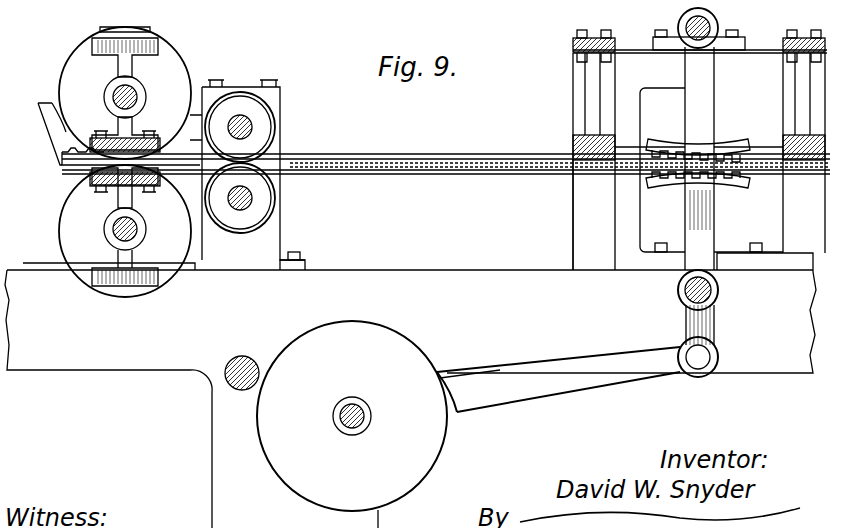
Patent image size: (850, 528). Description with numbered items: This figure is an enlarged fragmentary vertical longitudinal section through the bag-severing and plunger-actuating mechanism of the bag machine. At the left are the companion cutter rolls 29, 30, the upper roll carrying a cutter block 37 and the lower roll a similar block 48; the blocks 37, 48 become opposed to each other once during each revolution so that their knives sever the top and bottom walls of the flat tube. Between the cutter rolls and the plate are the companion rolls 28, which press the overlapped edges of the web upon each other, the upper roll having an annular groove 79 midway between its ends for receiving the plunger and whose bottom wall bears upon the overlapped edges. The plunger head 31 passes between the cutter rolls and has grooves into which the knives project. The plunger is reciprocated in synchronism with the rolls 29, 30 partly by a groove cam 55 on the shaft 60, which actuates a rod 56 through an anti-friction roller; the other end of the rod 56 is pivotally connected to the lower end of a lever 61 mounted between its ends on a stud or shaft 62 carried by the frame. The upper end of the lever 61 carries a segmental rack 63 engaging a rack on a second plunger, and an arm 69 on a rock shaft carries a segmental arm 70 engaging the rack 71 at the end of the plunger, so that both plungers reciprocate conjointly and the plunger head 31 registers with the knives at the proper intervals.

The cutter roll 29 is at (143, 43).
The roll 30 is at (56, 222).
The plunger head 31 is at (77, 172).
The cutter block 37 is at (132, 148).
The block 48 is at (147, 188).
The annular groove 79 is at (283, 104).
The companion rolls 28 is at (275, 170).
The segmental rack 63 is at (348, 154).
The arm 69 is at (707, 82).
The segmental arm 70 is at (731, 140).
The rack 71 is at (756, 168).
The stud or shaft 62 is at (720, 296).
The lever 61 is at (712, 318).
The shaft 60 is at (338, 413).
The rod 56 is at (537, 388).
The cam 55 is at (433, 457).